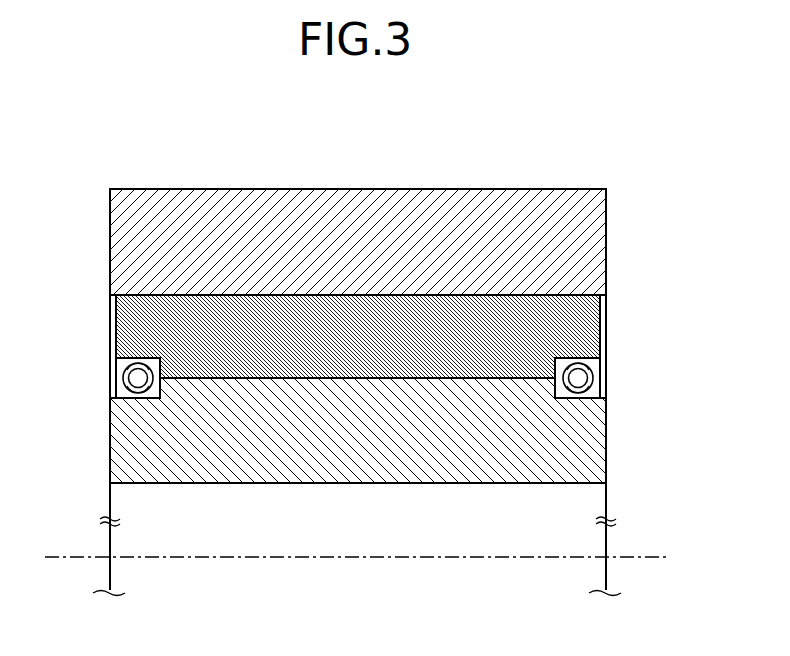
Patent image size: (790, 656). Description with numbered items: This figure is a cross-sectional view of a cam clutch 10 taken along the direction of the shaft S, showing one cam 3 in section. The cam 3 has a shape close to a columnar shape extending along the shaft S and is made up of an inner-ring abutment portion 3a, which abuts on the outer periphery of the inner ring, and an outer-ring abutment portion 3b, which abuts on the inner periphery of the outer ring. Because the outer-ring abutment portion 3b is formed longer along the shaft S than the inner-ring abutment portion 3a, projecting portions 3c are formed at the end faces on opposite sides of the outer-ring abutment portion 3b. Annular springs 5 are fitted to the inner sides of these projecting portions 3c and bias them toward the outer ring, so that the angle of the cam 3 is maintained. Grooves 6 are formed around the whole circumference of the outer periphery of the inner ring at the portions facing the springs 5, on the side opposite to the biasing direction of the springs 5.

The cam clutch 10 is at (548, 175).
The cam 3 is at (331, 314).
The inner-ring abutment portion 3a is at (543, 367).
The outer-ring abutment portion 3b is at (500, 316).
The projecting portion 3c is at (117, 360).
The spring 5 is at (124, 373).
The groove 6 is at (116, 396).
The shaft S is at (72, 553).